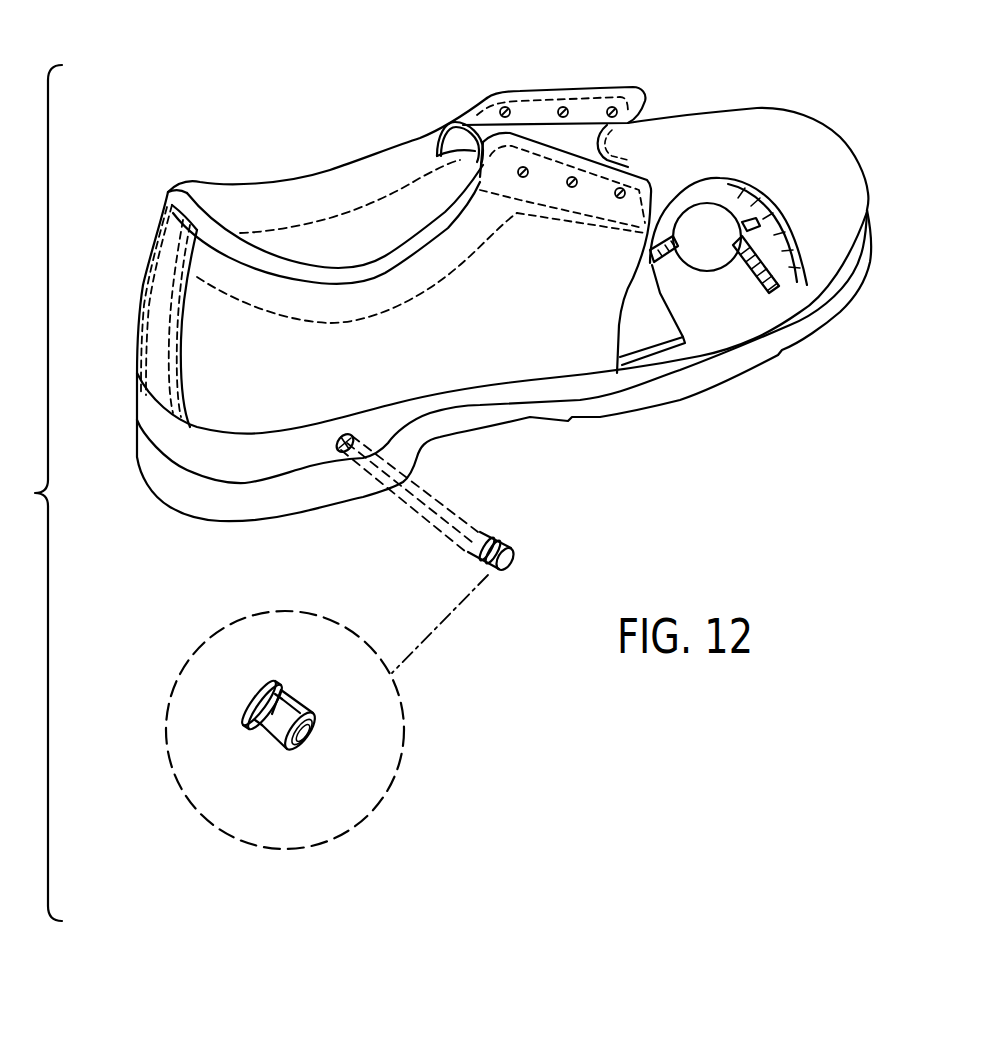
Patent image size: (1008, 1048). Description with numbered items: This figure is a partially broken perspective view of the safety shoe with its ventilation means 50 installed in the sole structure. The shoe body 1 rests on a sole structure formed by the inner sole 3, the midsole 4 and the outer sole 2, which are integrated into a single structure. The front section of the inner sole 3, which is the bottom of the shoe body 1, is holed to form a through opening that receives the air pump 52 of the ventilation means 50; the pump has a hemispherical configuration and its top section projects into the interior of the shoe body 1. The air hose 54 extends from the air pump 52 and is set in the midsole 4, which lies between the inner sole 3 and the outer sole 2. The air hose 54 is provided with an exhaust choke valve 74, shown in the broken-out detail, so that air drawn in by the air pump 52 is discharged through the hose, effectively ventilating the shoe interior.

The shoe body 1 is at (720, 128).
The outer sole 2 is at (227, 503).
The inner sole 3 is at (790, 272).
The midsole 4 is at (170, 443).
The ventilation means 50 is at (712, 276).
The air pump 52 is at (704, 222).
The air hose 54 is at (663, 262).
The exhaust choke valve 74 is at (270, 737).